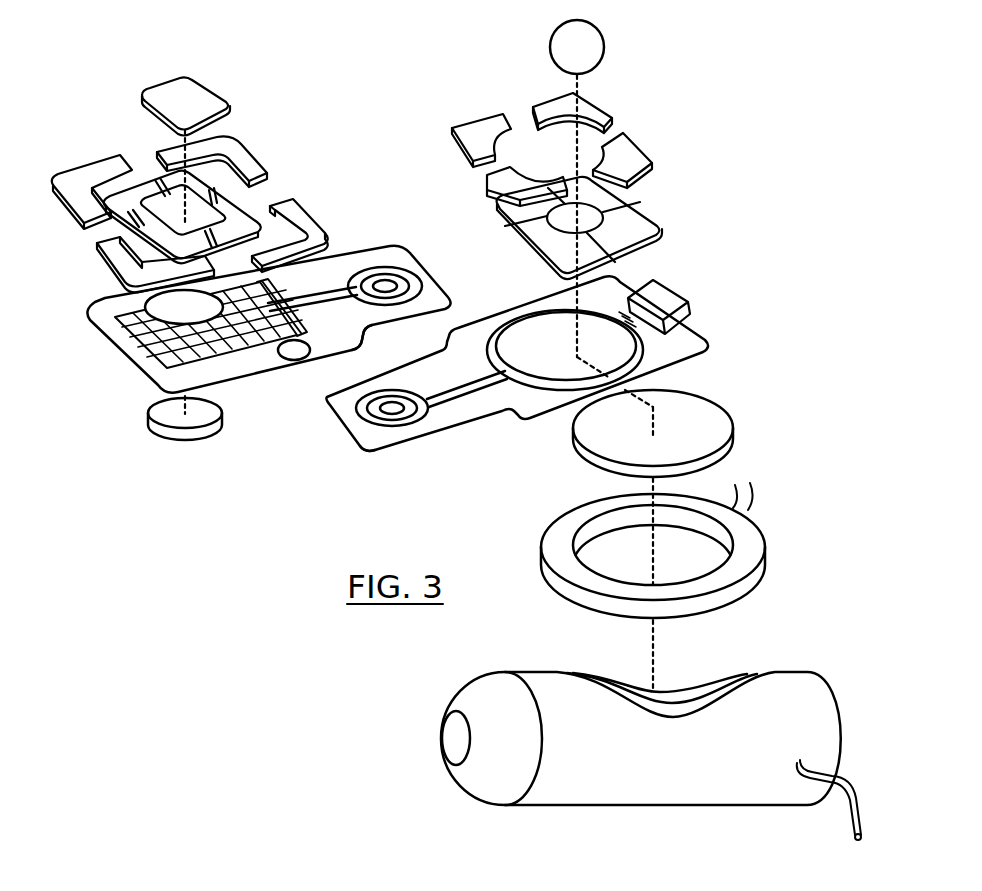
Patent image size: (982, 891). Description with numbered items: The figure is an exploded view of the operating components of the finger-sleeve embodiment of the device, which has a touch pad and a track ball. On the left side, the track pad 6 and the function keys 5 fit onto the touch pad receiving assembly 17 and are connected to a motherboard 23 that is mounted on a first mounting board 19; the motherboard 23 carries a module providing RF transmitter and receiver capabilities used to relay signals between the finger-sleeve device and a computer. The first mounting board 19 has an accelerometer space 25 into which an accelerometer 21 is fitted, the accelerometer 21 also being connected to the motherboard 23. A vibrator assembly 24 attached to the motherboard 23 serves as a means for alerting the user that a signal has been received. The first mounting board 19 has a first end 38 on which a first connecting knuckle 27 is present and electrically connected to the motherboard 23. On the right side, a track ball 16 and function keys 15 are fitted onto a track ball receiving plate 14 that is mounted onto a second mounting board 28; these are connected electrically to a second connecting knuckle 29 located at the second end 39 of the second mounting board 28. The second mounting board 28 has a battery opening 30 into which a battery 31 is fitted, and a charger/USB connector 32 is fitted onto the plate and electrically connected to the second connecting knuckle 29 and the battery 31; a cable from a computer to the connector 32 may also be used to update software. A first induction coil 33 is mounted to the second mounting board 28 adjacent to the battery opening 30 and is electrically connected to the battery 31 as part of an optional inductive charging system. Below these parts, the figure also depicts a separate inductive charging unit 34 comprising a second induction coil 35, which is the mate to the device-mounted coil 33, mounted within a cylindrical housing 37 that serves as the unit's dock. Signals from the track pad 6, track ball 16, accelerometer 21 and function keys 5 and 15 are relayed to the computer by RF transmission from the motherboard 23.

The function keys 5 is at (130, 227).
The track pad 6 is at (192, 96).
The track ball receiving plate 14 is at (510, 212).
The function keys 15 is at (598, 113).
The track ball 16 is at (593, 45).
The touch pad receiving assembly 17 is at (83, 175).
The first mounting board 19 is at (95, 332).
The accelerometer 21 is at (170, 435).
The motherboard 23 is at (158, 370).
The vibrator assembly 24 is at (290, 362).
The accelerometer space 25 is at (125, 325).
The first connecting knuckle 27 is at (382, 283).
The second mounting board 28 is at (523, 418).
The second connecting knuckle 29 is at (378, 412).
The battery opening 30 is at (627, 352).
The battery 31 is at (705, 410).
The charger/USB connector 32 is at (665, 293).
The first induction coil 33 is at (765, 546).
The inductive charging unit 34 is at (651, 750).
The second induction coil 35 is at (757, 675).
The cylindrical housing 37 is at (623, 778).
The first end 38 is at (405, 312).
The second end 39 is at (388, 446).